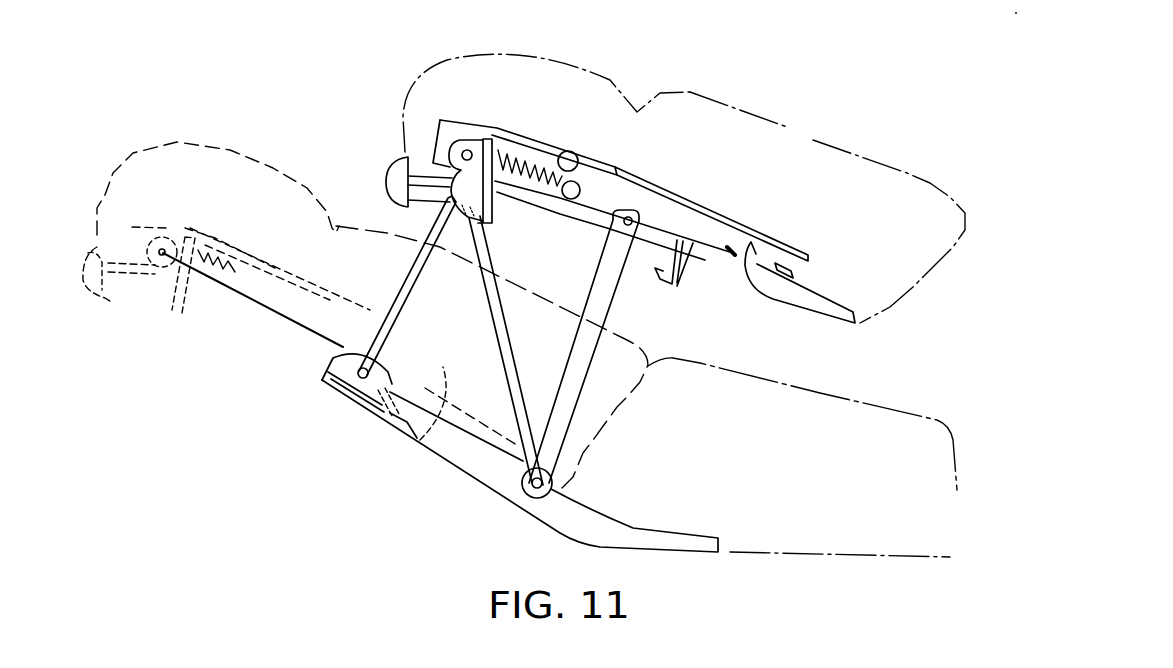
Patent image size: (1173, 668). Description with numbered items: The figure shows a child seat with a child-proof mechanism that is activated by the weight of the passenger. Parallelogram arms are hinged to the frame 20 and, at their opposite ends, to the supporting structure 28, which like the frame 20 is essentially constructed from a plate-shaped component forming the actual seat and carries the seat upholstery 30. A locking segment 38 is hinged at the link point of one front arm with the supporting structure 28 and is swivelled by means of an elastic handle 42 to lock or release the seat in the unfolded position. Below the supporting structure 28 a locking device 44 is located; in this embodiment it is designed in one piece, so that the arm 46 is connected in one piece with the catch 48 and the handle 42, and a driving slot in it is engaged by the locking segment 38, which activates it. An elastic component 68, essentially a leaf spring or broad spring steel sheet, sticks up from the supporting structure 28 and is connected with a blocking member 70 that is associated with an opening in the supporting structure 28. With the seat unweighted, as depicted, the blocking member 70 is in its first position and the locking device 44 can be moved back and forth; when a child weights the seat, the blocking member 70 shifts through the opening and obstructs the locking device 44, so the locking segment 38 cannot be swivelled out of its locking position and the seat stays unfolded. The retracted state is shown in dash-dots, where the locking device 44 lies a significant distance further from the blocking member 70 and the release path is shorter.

The frame 20 is at (555, 516).
The supporting structure 28 is at (440, 120).
The seat upholstery 30 is at (607, 100).
The locking segment 38 is at (466, 150).
The handle 42 is at (393, 178).
The locking device 44 is at (697, 273).
The arm 46 is at (542, 192).
The catch 48 is at (672, 280).
The elastic component 68 is at (726, 228).
The blocking member 70 is at (757, 285).